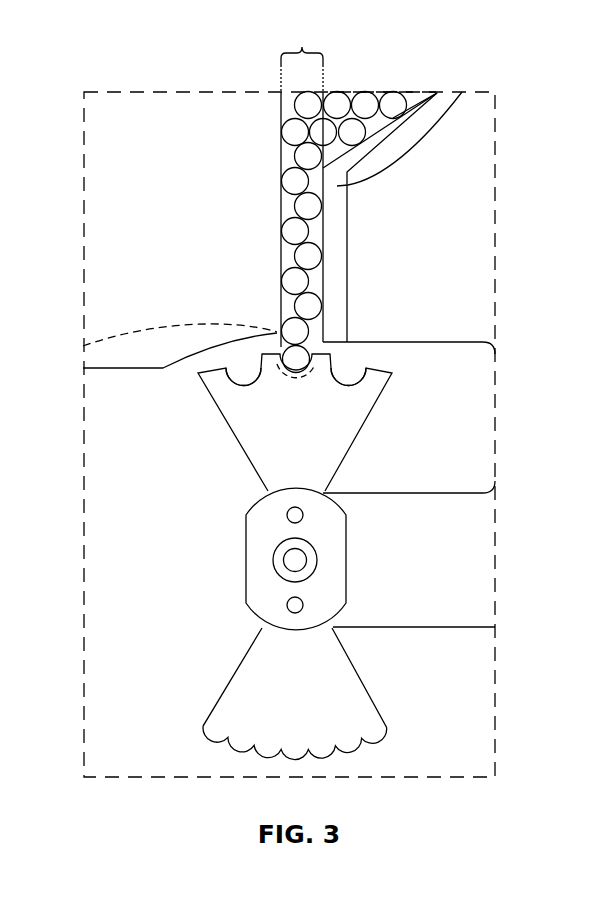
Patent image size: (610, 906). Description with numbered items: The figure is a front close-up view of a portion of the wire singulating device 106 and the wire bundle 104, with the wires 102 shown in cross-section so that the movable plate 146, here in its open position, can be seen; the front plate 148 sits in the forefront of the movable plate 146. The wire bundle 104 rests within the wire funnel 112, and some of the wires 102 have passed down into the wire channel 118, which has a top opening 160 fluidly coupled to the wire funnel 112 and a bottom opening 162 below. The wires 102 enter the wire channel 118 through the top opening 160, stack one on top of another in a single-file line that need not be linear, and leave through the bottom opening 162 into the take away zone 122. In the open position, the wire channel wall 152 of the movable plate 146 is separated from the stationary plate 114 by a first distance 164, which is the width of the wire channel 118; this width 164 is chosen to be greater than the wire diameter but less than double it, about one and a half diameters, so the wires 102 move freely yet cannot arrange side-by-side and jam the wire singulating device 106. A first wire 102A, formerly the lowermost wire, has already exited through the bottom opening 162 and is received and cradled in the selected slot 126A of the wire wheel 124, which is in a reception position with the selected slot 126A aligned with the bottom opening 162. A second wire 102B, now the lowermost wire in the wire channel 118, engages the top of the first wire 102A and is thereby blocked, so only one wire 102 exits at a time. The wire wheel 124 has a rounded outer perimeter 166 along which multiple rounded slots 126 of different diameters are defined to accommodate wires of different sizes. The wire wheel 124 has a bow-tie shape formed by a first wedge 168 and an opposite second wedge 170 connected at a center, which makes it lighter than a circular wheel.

The wires 102 is at (295, 182).
The first wire 102A is at (296, 359).
The second wire 102B is at (295, 331).
The wire bundle 104 is at (354, 93).
The wire singulating device 106 is at (533, 111).
The wire funnel 112 is at (412, 105).
The stationary plate 114 is at (162, 127).
The wire channel 118 is at (276, 206).
The take away zone 122 is at (83, 346).
The wire wheel 124 is at (310, 445).
The slot 126 is at (239, 392).
The selected slot 126A is at (309, 382).
The movable plate 146 is at (462, 92).
The front plate 148 is at (440, 167).
The wire channel wall 152 is at (323, 225).
The top opening 160 is at (286, 154).
The bottom opening 162 is at (277, 327).
The first distance 164 is at (302, 55).
The outer perimeter 166 is at (203, 366).
The first wedge 168 is at (275, 456).
The second wedge 170 is at (255, 698).